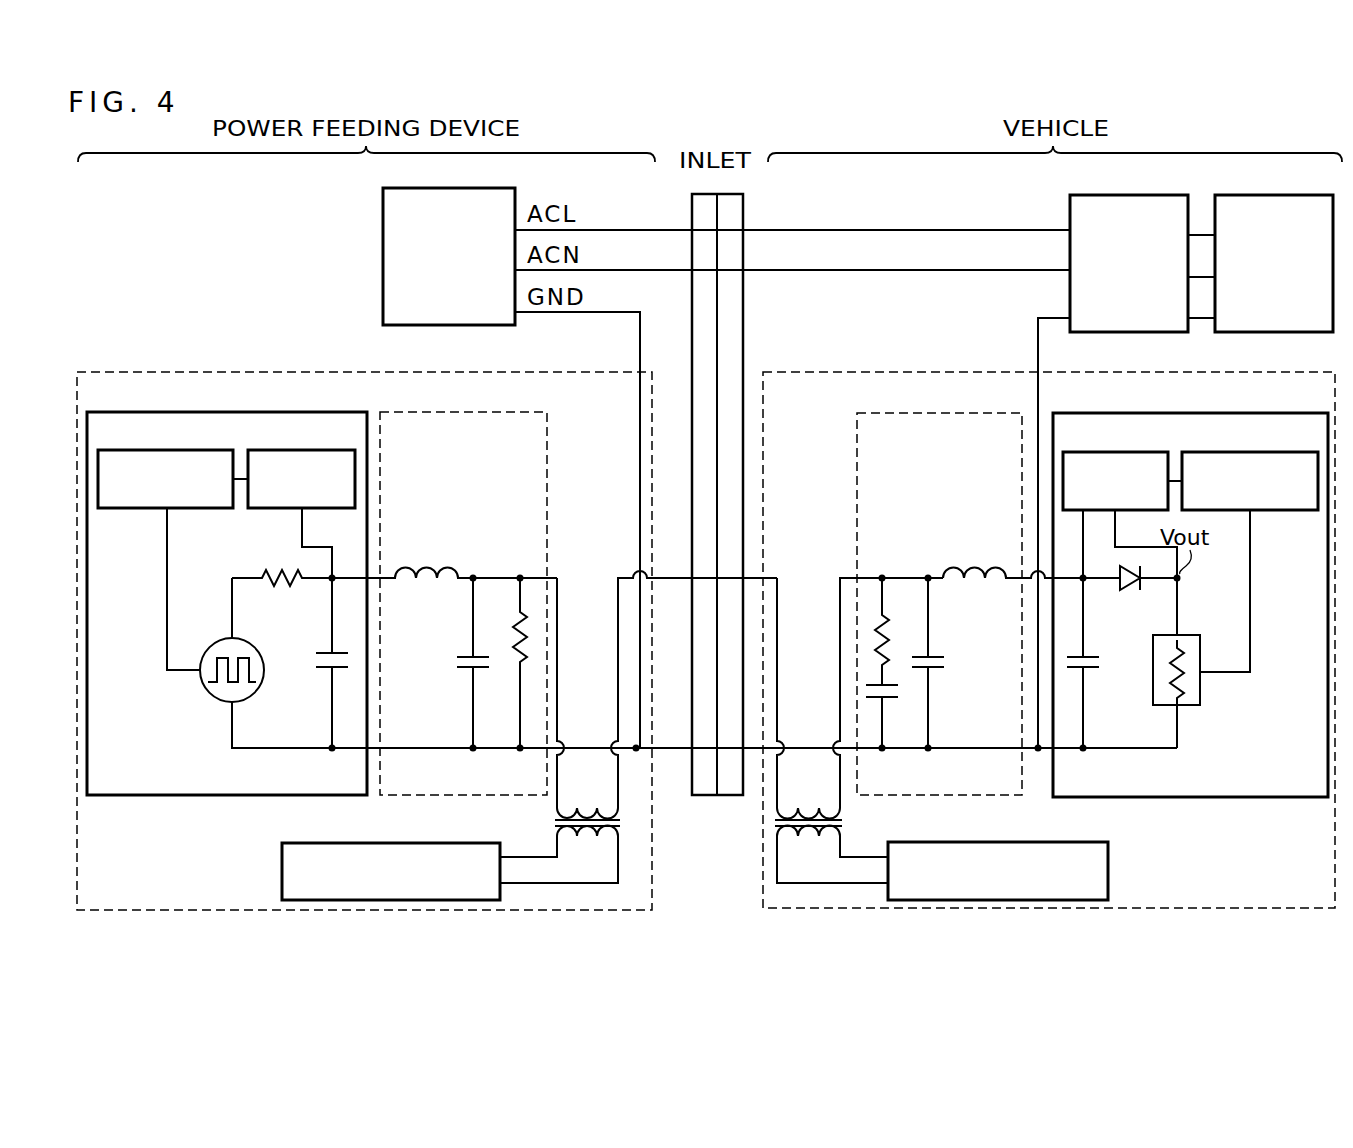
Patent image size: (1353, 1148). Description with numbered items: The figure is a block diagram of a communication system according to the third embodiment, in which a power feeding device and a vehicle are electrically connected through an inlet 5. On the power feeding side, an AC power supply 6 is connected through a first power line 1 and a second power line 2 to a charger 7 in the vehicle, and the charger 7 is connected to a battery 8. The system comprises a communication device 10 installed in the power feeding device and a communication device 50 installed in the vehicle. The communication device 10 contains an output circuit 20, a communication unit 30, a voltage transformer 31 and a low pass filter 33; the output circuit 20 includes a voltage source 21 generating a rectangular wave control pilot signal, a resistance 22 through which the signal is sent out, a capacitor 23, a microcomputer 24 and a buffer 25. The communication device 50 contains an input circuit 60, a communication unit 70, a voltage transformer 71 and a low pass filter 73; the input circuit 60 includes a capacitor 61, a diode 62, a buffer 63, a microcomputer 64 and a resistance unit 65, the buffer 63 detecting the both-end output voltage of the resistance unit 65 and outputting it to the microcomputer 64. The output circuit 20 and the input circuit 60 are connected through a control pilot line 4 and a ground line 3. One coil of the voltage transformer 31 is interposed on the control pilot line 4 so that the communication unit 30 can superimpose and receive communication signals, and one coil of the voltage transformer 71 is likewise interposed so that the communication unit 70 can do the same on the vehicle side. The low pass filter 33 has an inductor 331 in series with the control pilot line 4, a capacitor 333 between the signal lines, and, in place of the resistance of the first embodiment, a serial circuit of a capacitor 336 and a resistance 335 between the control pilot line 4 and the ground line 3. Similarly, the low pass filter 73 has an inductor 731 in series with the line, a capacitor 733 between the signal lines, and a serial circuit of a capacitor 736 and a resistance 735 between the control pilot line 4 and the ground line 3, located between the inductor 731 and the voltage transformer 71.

The power line 1 is at (897, 232).
The power line 2 is at (897, 274).
The ground line 3 is at (670, 752).
The control pilot line 4 is at (670, 582).
The inlet 5 is at (700, 190).
The AC power supply 6 is at (383, 221).
The charger 7 is at (1123, 193).
The battery 8 is at (1268, 193).
The communication device 10 is at (130, 369).
The output circuit 20 is at (160, 797).
The voltage source 21 is at (262, 642).
The resistance 22 is at (270, 572).
The capacitor 23 is at (314, 660).
The microcomputer 24 is at (145, 450).
The buffer 25 is at (278, 450).
The communication unit 30 is at (282, 862).
The voltage transformer 31 is at (552, 822).
The low pass filter 33 is at (458, 410).
The inductor 331 is at (434, 570).
The capacitor 333 is at (460, 660).
The resistance 335 is at (508, 605).
The capacitor 336 is at (502, 710).
The communication device 50 is at (1222, 369).
The input circuit 60 is at (1280, 798).
The capacitor 61 is at (1102, 662).
The diode 62 is at (1130, 592).
The buffer 63 is at (1092, 452).
The microcomputer 64 is at (1228, 452).
The resistance unit 65 is at (1200, 705).
The communication unit 70 is at (1108, 864).
The voltage transformer 71 is at (848, 822).
The low pass filter 73 is at (945, 410).
The inductor 731 is at (976, 570).
The capacitor 733 is at (945, 665).
The resistance 735 is at (895, 640).
The capacitor 736 is at (910, 700).